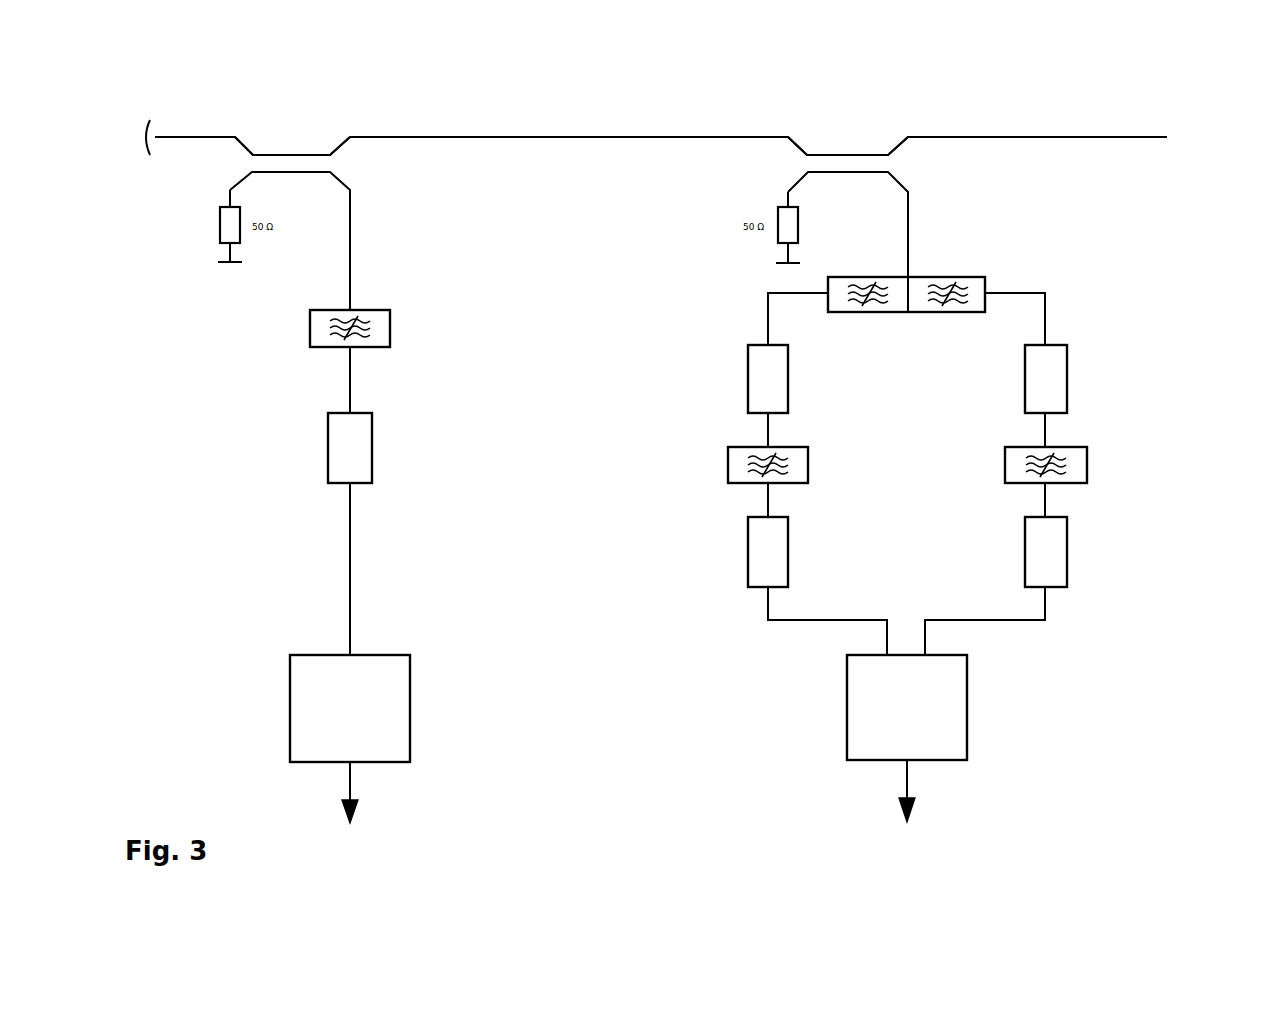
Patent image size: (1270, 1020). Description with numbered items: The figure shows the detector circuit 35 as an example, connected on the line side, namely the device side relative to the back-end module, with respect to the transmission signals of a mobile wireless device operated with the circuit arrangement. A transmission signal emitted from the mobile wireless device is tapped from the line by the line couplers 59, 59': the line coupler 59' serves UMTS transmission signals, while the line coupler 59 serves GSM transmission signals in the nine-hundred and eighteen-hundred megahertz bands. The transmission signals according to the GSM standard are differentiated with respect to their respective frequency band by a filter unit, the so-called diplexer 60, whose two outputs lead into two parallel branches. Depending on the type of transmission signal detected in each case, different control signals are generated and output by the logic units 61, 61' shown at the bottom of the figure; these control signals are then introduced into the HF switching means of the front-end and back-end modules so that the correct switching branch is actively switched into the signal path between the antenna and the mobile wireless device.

The detector circuit 35 is at (1203, 203).
The line coupler 59 is at (906, 88).
The line coupler 59' is at (338, 98).
The diplexer 60 is at (913, 287).
The logic unit 61 is at (907, 738).
The logic unit 61' is at (350, 739).